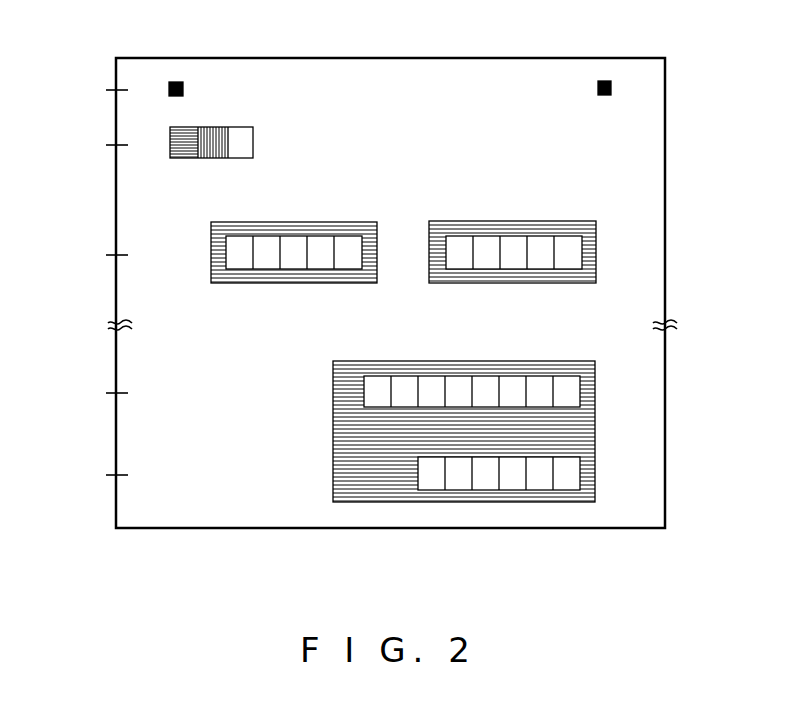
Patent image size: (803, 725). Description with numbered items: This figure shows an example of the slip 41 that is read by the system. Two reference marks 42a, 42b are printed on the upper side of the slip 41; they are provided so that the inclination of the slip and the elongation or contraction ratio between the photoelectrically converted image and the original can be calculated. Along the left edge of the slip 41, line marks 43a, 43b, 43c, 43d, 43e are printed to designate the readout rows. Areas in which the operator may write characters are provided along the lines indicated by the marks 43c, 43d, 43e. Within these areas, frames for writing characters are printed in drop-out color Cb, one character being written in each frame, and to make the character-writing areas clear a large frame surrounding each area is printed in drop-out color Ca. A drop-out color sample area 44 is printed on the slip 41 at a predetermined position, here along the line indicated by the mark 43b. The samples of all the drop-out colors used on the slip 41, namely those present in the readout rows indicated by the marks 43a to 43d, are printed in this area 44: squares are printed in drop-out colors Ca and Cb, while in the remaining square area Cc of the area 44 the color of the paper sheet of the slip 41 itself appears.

The slip 41 is at (445, 57).
The reference mark 42a is at (176, 80).
The reference mark 42b is at (609, 78).
The line mark 43a is at (106, 90).
The line mark 43b is at (106, 145).
The line mark 43c is at (106, 255).
The line mark 43d is at (106, 393).
The line mark 43e is at (106, 475).
The drop-out color sample area 44 is at (213, 125).
The drop-out color Ca ca is at (180, 158).
The drop-out color Cb cb is at (213, 158).
The square area Cc cc is at (243, 152).